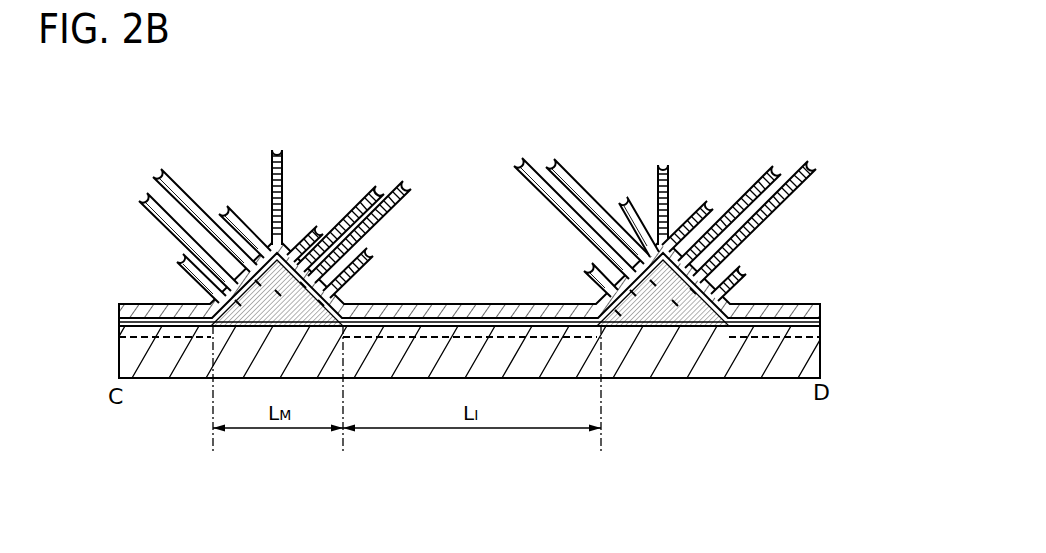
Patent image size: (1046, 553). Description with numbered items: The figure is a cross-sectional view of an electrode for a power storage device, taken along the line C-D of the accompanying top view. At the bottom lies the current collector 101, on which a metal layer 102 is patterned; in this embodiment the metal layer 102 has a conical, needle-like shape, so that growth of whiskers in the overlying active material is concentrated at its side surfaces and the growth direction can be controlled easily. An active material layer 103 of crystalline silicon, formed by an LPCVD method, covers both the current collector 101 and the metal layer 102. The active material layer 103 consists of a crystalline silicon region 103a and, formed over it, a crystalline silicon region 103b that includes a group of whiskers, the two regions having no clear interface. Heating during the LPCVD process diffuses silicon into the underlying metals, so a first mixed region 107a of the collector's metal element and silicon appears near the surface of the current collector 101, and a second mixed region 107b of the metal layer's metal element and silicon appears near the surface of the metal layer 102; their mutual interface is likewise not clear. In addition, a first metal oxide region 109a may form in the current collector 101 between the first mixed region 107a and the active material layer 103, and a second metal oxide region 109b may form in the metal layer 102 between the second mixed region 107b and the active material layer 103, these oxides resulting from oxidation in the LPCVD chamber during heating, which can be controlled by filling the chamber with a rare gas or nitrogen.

The current collector 101 is at (778, 362).
The metal layer 102 is at (672, 313).
The active material layer 103 is at (475, 223).
The crystalline silicon region 103a is at (823, 303).
The crystalline silicon region including a whisker group 103b is at (516, 216).
The first mixed region 107a is at (492, 332).
The second mixed region 107b is at (612, 352).
The first metal oxide region 109a is at (440, 318).
The second metal oxide region 109b is at (330, 296).